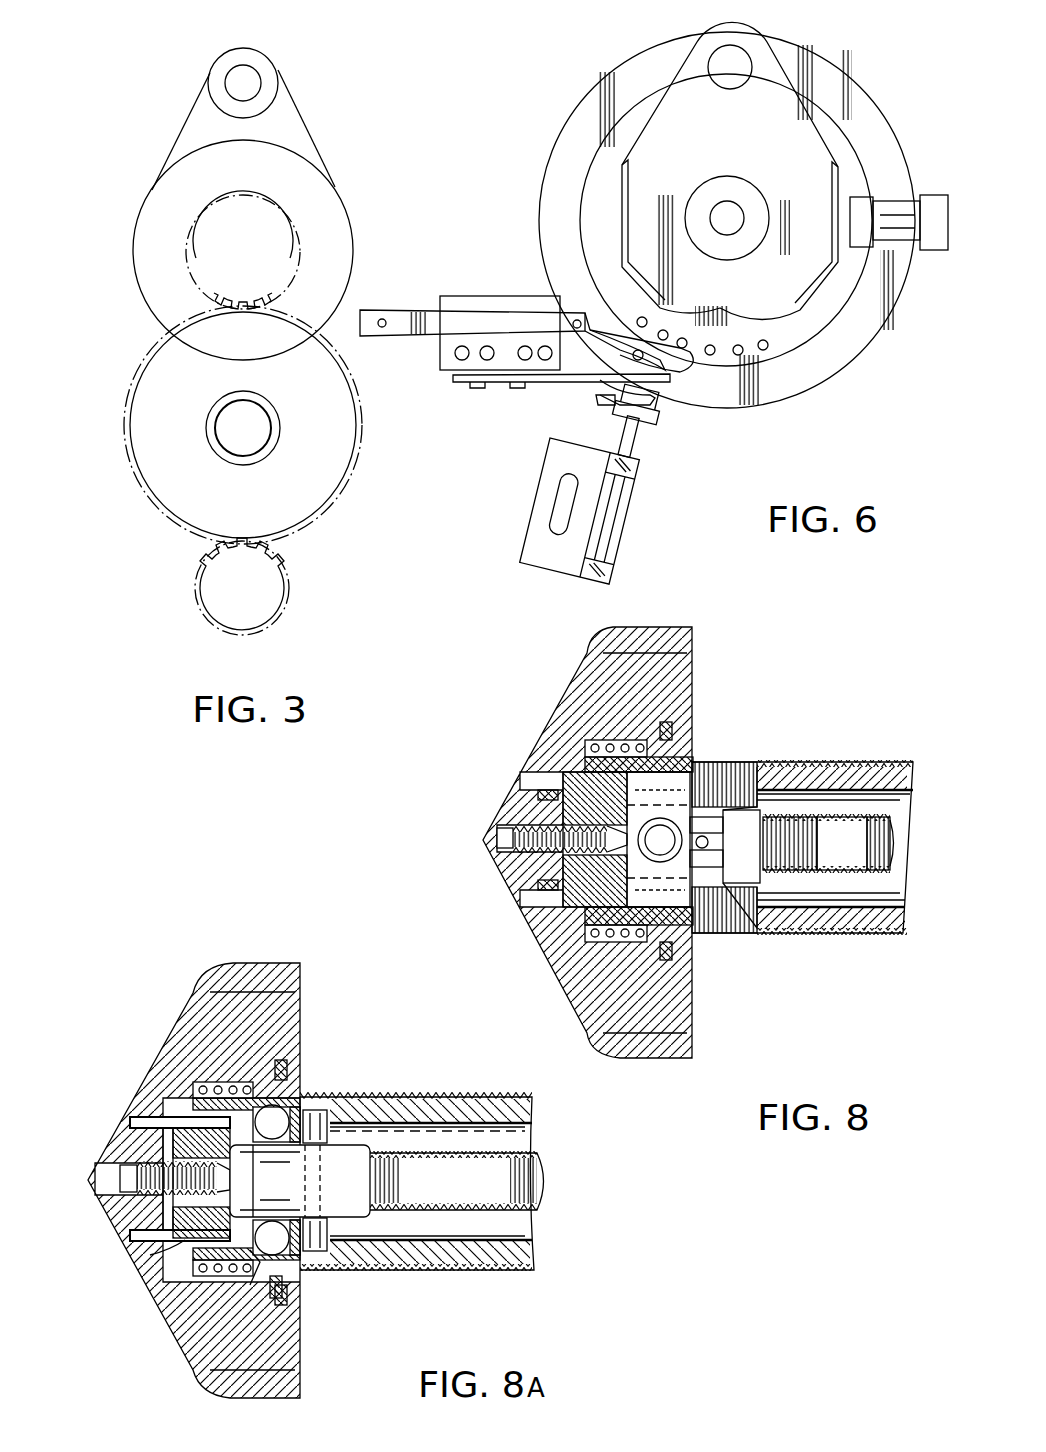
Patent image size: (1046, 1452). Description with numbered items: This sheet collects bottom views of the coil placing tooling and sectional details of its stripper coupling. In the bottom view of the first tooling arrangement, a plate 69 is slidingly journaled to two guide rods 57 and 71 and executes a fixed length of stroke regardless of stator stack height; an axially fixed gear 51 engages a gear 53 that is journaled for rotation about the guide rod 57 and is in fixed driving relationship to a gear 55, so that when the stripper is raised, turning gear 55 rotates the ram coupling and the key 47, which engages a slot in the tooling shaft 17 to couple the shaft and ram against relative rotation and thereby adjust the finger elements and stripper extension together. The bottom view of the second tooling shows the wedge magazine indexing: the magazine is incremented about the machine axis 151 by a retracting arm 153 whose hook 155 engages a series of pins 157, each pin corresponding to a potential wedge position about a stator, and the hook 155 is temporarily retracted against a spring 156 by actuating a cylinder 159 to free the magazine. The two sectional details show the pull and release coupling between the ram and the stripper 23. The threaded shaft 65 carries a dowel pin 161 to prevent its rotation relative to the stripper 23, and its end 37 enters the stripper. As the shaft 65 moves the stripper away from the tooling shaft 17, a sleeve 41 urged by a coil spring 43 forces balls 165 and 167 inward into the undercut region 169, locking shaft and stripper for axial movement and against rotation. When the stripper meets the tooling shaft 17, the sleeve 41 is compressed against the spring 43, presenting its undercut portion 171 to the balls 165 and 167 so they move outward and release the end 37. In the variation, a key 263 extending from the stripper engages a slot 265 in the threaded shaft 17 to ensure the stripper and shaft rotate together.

In FIG. 3, the guide rod 71 is at (238, 83).
In FIG. 3, the plate 69 is at (308, 188).
In FIG. 3, the gear 55 is at (280, 255).
In FIG. 3, the guide rod 57 is at (225, 432).
In FIG. 3, the gear 53 is at (308, 498).
In FIG. 3, the axially fixed gear 51 is at (222, 602).
In FIG. 6, the machine axis 151 is at (727, 205).
In FIG. 6, the key 47 is at (888, 252).
In FIG. 6, the retracting arm 153 is at (422, 338).
In FIG. 6, the spring 156 is at (570, 385).
In FIG. 6, the hook 155 is at (680, 372).
In FIG. 6, the pins 157 is at (766, 352).
In FIG. 6, the cylinder 159 is at (625, 540).
In FIG. 8, the coil spring 43 is at (600, 748).
In FIG. 8A, the coil spring 43 is at (210, 1088).
In FIG. 8, the sleeve 41 is at (690, 765).
In FIG. 8A, the sleeve 41 is at (195, 1100).
In FIG. 8, the slot 265 is at (730, 800).
In FIG. 8A, the slot 265 is at (322, 1115).
In FIG. 8, the dowel pin 161 is at (708, 838).
In FIG. 8A, the dowel pin 161 is at (318, 1225).
In FIG. 8, the threaded shaft 65 is at (880, 852).
In FIG. 8A, the threaded shaft 65 is at (545, 1180).
In FIG. 8, the stripper 23 is at (500, 870).
In FIG. 8A, the stripper 23 is at (118, 1225).
In FIG. 8, the key 263 is at (665, 862).
In FIG. 8, the ball 167 is at (688, 905).
In FIG. 8A, the ball 167 is at (285, 1110).
In FIG. 8A, the tooling shaft 17 is at (483, 1097).
In FIG. 8A, the ram end 37 is at (160, 1140).
In FIG. 8A, the undercut region 169 is at (180, 1262).
In FIG. 8A, the undercut portion 171 is at (275, 1262).
In FIG. 8A, the ball 165 is at (262, 1285).